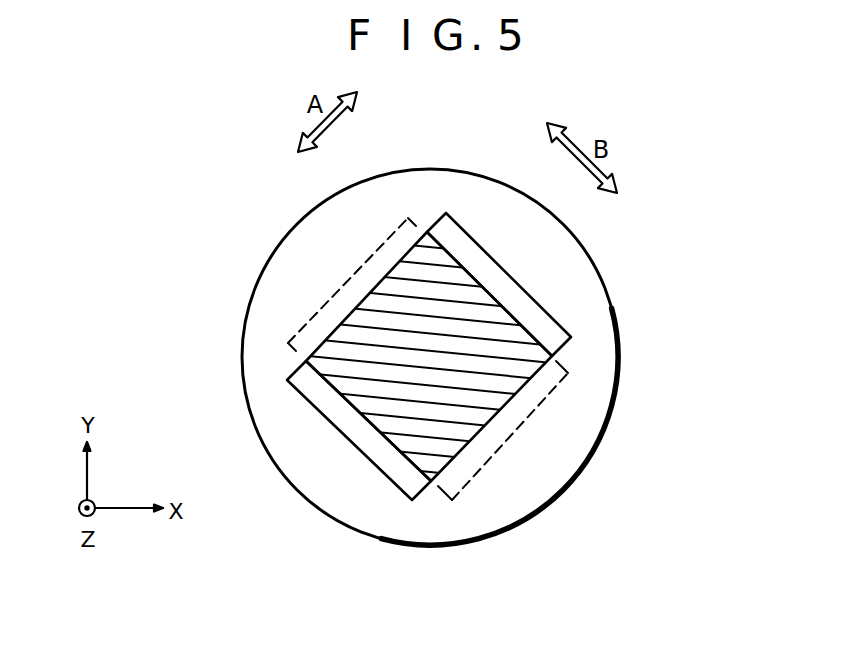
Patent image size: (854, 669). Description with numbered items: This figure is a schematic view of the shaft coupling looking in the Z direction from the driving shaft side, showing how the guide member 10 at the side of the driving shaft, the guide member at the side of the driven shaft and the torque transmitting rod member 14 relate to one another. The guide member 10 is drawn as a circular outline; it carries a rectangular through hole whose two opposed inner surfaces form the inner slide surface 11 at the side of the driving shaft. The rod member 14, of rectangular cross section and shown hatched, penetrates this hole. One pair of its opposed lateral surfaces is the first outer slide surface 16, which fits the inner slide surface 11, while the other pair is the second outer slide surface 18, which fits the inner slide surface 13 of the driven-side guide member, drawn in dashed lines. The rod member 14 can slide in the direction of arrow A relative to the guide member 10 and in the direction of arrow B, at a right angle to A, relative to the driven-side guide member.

The guide member at the side of the driving shaft 10 is at (338, 500).
The inner slide surface at the side of the driving shaft 11 is at (418, 487).
The inner slide surface at the side of the driven shaft 13 is at (420, 237).
The torque transmitting rod member 14 is at (460, 421).
The first outer slide surface 16 is at (517, 397).
The second outer slide surface 18 is at (513, 313).